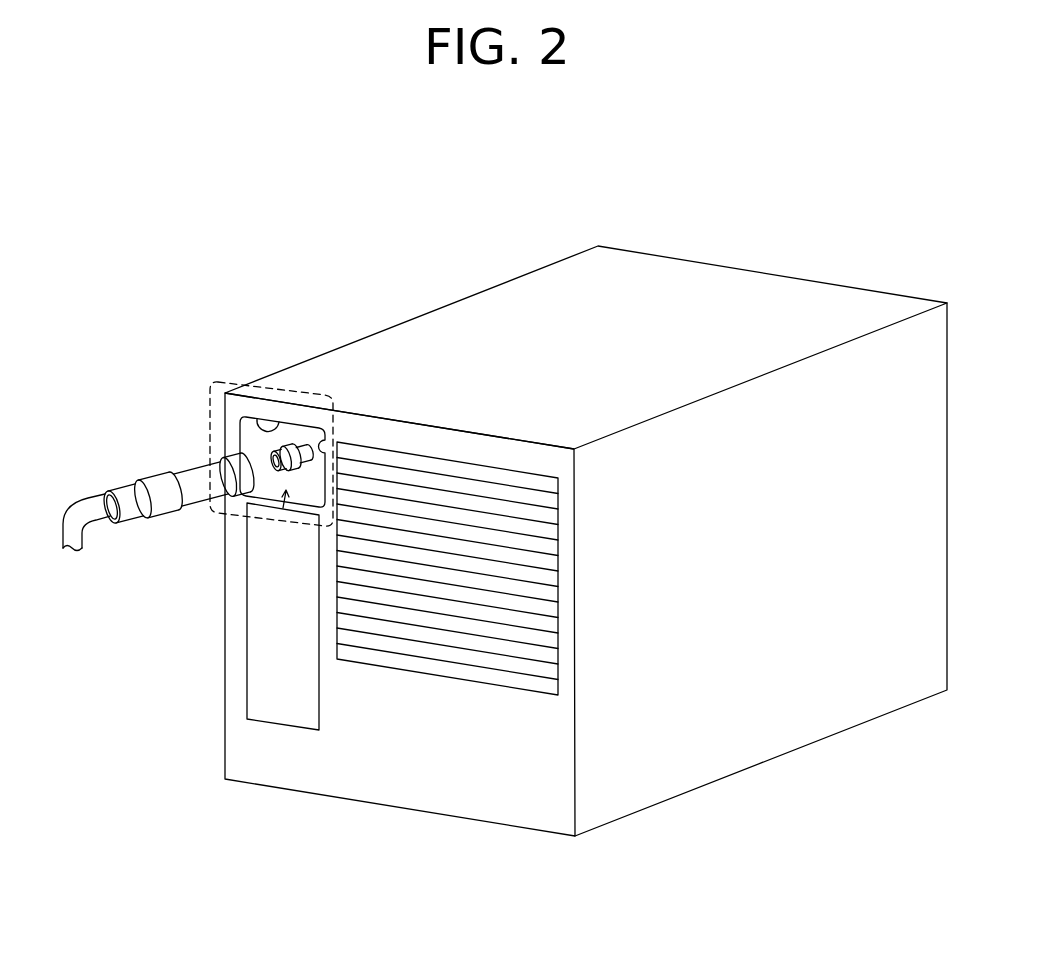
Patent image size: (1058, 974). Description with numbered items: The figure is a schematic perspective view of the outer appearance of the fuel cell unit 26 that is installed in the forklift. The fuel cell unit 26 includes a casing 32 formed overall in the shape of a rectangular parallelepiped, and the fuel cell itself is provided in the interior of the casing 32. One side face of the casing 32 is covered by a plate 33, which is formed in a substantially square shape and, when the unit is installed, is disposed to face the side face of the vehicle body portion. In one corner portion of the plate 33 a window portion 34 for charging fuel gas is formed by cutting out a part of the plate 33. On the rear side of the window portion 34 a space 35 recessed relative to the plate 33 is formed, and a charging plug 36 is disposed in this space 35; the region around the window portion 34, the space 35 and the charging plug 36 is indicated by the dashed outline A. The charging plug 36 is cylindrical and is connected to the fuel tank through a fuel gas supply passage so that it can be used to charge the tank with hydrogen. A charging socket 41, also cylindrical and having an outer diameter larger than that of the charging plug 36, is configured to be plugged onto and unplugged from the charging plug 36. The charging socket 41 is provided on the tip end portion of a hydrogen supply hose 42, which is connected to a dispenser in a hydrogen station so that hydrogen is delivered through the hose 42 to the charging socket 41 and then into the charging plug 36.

The fuel cell unit 26 is at (452, 234).
The casing 32 is at (528, 270).
The plate 33 is at (385, 740).
The window portion 34 is at (266, 418).
The space 35 is at (281, 510).
The charging plug 36 is at (297, 444).
The charging socket 41 is at (178, 474).
The hydrogen supply hose 42 is at (94, 497).
The connection region A is at (208, 408).